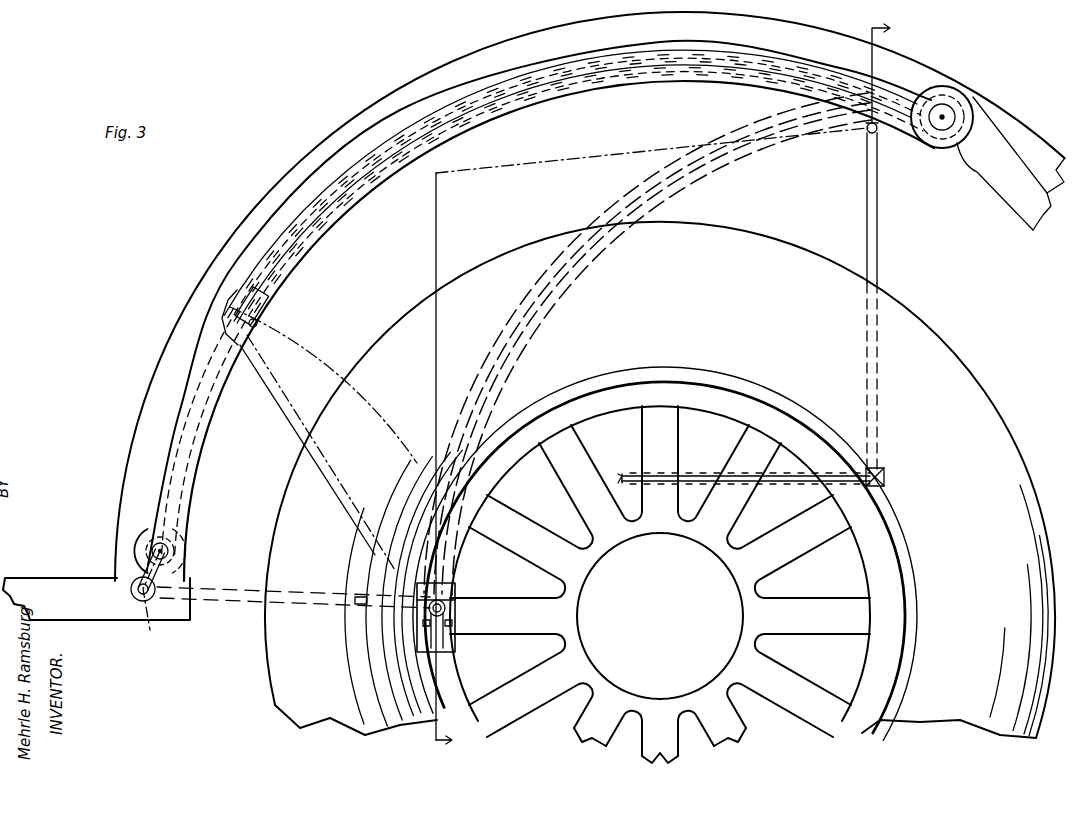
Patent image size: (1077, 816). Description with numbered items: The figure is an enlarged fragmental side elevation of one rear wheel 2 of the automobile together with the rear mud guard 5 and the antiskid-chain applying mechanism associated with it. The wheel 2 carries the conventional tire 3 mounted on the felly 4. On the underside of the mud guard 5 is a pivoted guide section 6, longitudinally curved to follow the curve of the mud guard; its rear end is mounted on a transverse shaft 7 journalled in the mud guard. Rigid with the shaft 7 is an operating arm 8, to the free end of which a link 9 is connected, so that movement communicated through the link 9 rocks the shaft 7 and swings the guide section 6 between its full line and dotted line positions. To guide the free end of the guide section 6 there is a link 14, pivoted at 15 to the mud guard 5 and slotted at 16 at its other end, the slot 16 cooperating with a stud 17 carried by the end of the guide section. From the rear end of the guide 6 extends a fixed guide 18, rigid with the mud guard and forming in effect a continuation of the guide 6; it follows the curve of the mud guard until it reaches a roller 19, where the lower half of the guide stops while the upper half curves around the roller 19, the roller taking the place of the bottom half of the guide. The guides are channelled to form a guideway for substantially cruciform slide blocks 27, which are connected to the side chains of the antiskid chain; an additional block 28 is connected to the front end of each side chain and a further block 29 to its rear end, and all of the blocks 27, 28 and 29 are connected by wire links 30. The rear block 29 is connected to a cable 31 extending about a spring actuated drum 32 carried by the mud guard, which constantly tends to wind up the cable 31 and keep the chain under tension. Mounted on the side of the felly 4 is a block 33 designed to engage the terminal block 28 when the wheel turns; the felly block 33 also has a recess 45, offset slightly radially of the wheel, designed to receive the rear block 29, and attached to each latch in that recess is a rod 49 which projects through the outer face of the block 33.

The rear wheel 2 is at (712, 528).
The tire 3 is at (660, 480).
The felly 4 is at (504, 466).
The rear mud guard 5 is at (140, 412).
The pivoted guide section 6 is at (628, 80).
The transverse shaft 7 is at (882, 134).
The operating arm 8 is at (880, 222).
The link 9 is at (690, 477).
The link 14 is at (182, 522).
The pivot 15 is at (143, 602).
The slot 16 is at (392, 601).
The stud 17 is at (257, 328).
The fixed guide 18 is at (978, 170).
The roller 19 is at (953, 112).
The slide block 27 is at (338, 160).
The terminal block 28 is at (270, 311).
The rear block 29 is at (240, 276).
The wire link 30 is at (286, 235).
The cable 31 is at (166, 476).
The spring actuated drum 32 is at (136, 551).
The felly block 33 is at (456, 650).
The recess 45 is at (418, 660).
The rod 49 is at (452, 626).